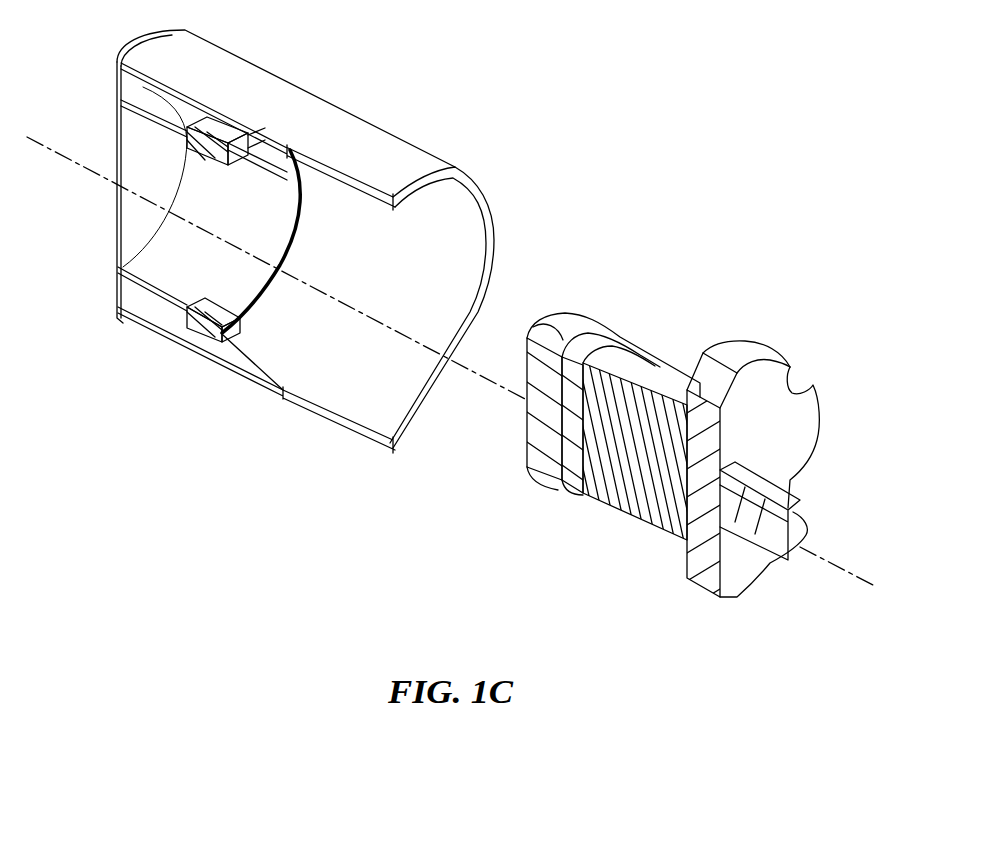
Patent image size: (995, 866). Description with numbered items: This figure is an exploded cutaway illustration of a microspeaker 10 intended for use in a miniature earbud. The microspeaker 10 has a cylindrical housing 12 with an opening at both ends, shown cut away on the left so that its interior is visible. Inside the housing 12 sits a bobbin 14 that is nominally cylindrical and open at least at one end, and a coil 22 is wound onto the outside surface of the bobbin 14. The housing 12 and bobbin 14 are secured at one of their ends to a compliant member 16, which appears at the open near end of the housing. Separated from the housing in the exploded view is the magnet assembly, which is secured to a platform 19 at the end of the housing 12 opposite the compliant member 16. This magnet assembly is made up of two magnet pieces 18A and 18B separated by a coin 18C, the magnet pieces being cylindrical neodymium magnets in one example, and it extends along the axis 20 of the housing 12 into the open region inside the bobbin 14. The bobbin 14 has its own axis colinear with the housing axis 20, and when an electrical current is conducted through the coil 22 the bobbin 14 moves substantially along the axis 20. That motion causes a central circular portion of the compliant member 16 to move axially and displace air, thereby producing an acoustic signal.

The microspeaker 10 is at (578, 216).
The cylindrical housing 12 is at (405, 160).
The bobbin 14 is at (173, 110).
The compliant member 16 is at (117, 242).
The magnet piece 18A is at (630, 512).
The magnet piece 18B is at (545, 470).
The coin 18C is at (567, 493).
The platform 19 is at (700, 572).
The axis 20 is at (67, 153).
The coil 22 is at (214, 128).